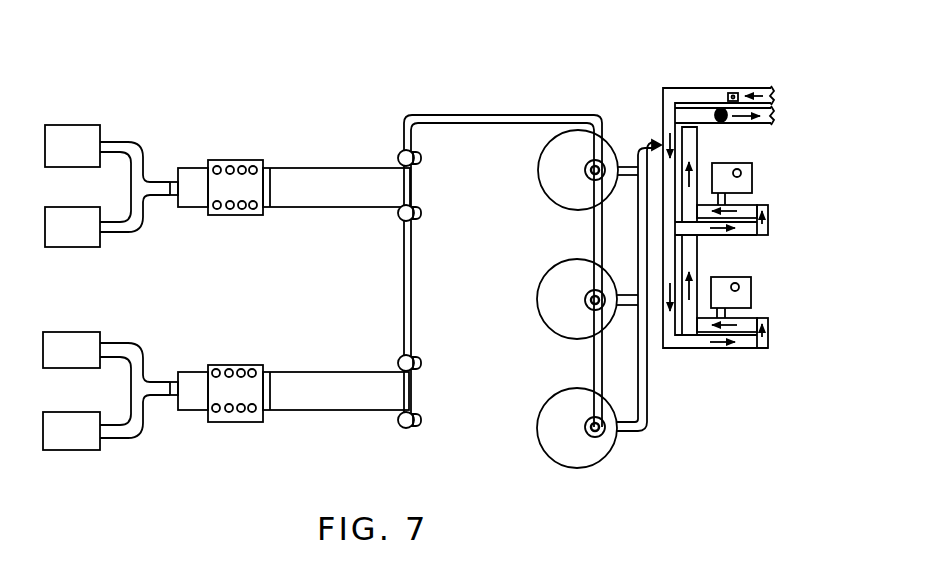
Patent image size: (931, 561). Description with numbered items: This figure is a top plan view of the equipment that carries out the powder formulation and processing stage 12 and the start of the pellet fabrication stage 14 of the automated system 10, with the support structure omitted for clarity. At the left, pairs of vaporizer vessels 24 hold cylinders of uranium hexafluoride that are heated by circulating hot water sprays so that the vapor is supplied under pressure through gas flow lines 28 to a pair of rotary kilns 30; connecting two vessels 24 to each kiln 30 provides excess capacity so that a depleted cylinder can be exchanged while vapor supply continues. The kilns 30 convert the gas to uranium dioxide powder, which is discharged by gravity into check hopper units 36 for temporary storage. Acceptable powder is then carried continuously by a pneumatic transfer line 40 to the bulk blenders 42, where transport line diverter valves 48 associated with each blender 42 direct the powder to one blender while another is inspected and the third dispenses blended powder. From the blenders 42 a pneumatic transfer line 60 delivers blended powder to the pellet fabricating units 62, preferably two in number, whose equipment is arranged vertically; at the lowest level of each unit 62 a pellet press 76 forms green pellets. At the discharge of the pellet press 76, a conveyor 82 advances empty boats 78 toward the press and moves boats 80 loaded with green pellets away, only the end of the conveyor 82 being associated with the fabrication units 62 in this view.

The automated system 10 is at (620, 71).
The powder formulation and processing stage 12 is at (293, 105).
The pellet fabrication stage 14 is at (728, 380).
The vaporizer vessels 24 is at (65, 124).
The gas flow lines 28 is at (166, 181).
The rotary kilns 30 is at (289, 167).
The check hopper units 36 is at (401, 151).
The pneumatic transfer line 40 is at (492, 114).
The bulk blenders 42 is at (541, 182).
The transport line diverter valves 48 is at (588, 166).
The pneumatic transfer line 60 is at (648, 406).
The pellet fabricating units 62 is at (734, 244).
The pellet press 76 is at (753, 179).
The empty boats 78 is at (736, 92).
The loaded boats 80 is at (722, 122).
The conveyor 82 is at (726, 97).